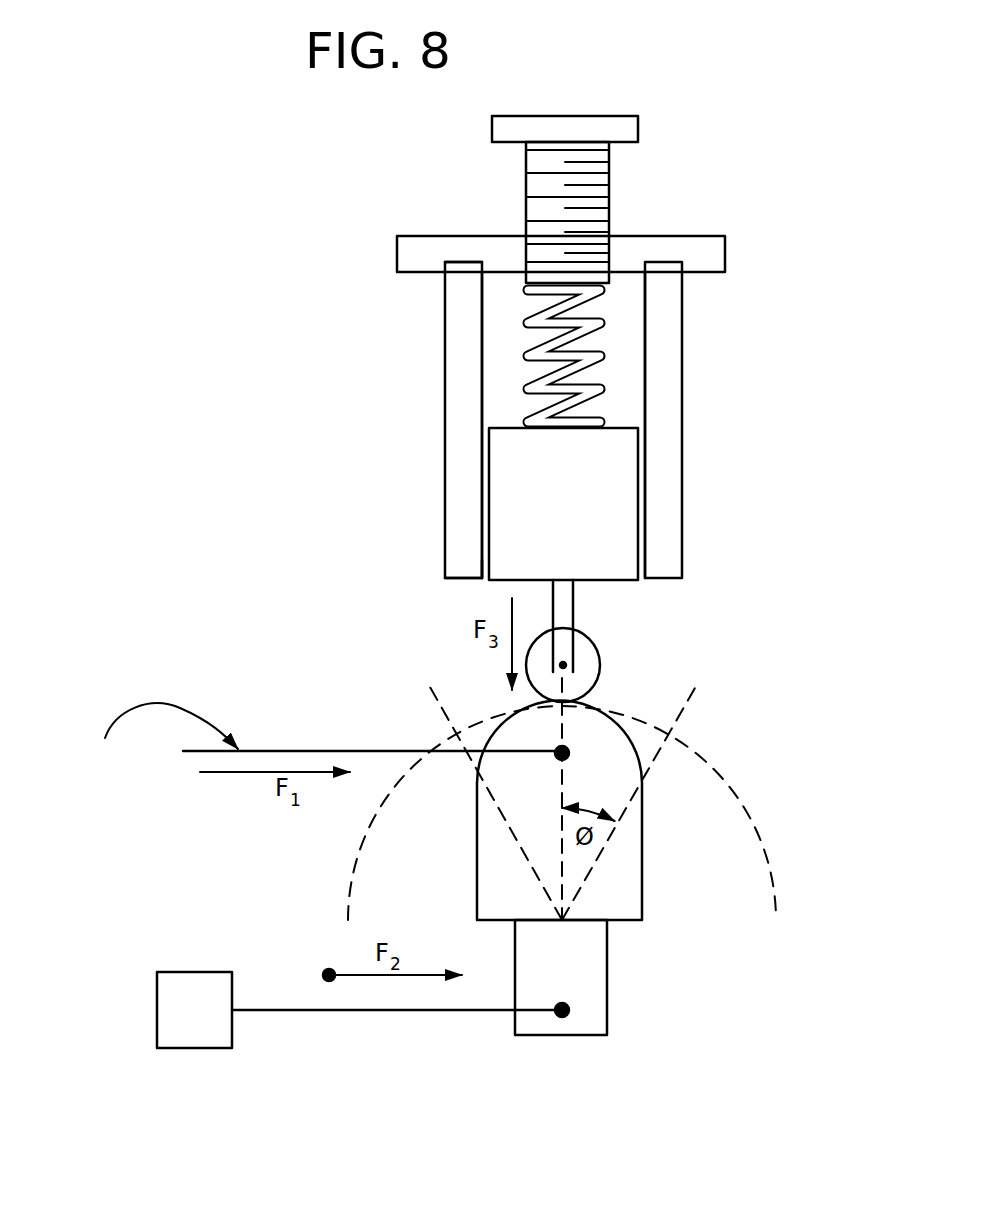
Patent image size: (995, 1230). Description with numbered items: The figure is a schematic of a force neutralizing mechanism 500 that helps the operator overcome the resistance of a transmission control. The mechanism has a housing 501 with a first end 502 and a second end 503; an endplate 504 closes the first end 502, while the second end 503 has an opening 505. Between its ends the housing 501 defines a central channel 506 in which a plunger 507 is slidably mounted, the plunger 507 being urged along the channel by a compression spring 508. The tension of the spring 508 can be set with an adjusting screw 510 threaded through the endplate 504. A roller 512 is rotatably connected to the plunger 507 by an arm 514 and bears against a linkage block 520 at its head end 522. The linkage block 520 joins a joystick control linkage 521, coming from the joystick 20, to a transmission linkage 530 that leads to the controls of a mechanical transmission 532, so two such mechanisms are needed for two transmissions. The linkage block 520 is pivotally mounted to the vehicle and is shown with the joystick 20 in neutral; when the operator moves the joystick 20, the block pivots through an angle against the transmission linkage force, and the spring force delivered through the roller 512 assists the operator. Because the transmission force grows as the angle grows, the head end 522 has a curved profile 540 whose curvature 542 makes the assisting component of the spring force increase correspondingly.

The force neutralizing mechanism 500 is at (295, 317).
The housing 501 is at (447, 427).
The first end 502 is at (447, 285).
The second end 503 is at (457, 536).
The endplate 504 is at (708, 253).
The opening 505 is at (485, 575).
The central channel 506 is at (513, 345).
The plunger 507 is at (603, 500).
The compression spring 508 is at (607, 322).
The adjusting screw 510 is at (610, 182).
The roller 512 is at (607, 650).
The arm 514 is at (567, 607).
The linkage block 520 is at (675, 812).
The joystick control linkage 521 is at (292, 751).
The head end 522 is at (510, 707).
The transmission linkage 530 is at (302, 1012).
The mechanical transmission 532 is at (198, 997).
The curved profile 540 is at (612, 708).
The curvature 542 is at (763, 847).
The joystick 20 is at (136, 760).